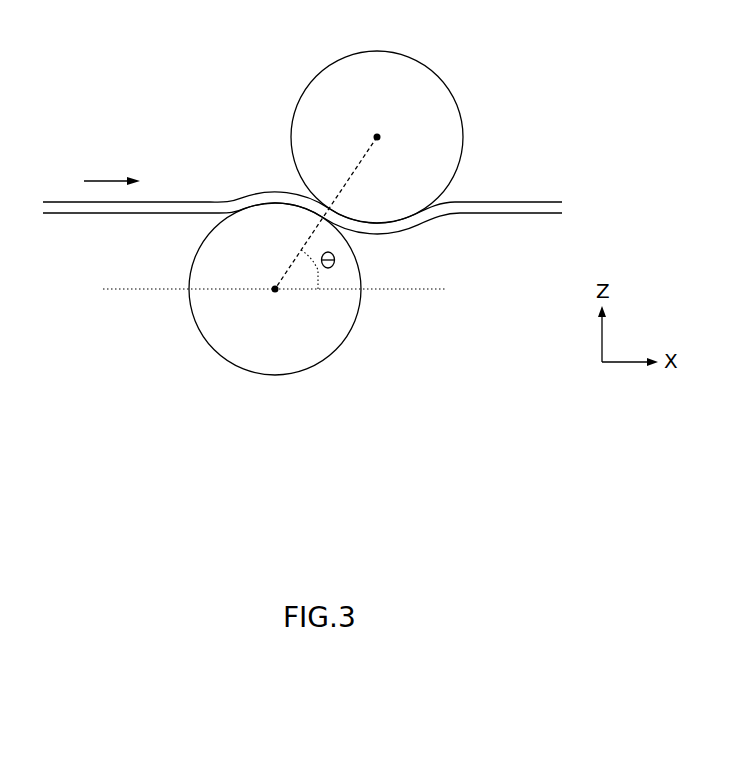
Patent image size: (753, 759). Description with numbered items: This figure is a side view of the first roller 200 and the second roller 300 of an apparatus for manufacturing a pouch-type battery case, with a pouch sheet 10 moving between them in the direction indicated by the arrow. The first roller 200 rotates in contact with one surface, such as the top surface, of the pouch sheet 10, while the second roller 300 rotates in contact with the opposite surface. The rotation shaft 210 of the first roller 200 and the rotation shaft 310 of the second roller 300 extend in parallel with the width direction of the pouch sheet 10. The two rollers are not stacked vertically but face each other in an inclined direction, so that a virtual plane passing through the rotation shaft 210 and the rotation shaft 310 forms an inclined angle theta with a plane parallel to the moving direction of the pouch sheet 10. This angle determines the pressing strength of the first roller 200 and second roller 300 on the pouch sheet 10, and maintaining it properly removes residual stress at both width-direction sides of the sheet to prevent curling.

The pouch sheet 10 is at (523, 203).
The first roller 200 is at (338, 72).
The rotation shaft of the first roller 210 is at (377, 132).
The second roller 300 is at (343, 322).
The rotation shaft of the second roller 310 is at (275, 289).